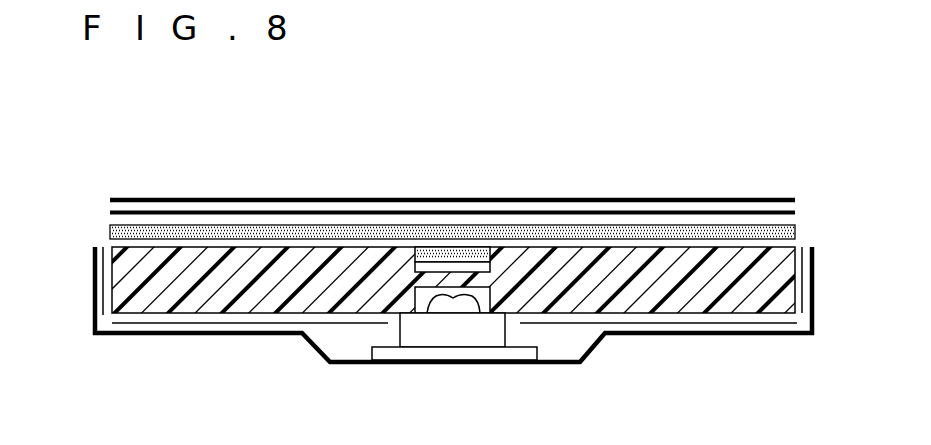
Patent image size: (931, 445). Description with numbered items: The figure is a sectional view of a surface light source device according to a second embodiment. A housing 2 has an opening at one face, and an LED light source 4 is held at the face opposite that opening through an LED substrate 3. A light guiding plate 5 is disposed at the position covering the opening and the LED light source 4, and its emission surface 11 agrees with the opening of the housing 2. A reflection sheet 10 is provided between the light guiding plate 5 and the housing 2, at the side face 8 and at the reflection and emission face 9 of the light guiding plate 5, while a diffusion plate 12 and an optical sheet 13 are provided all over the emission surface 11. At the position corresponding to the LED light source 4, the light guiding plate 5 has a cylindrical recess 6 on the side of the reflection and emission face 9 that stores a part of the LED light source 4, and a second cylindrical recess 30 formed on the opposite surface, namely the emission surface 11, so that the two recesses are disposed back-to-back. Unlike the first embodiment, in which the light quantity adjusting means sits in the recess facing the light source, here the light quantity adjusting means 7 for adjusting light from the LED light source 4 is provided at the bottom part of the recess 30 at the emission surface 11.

The housing 2 is at (772, 333).
The LED substrate 3 is at (385, 356).
The LED light source 4 is at (487, 333).
The light guiding plate 5 is at (733, 262).
The cylindrical recess 6 is at (431, 300).
The light quantity adjusting means 7 is at (430, 258).
The side face 8 is at (797, 285).
The reflection and emission face 9 is at (677, 313).
The reflection sheet 10 is at (217, 322).
The emission surface 11 is at (645, 247).
The diffusion plate 12 is at (265, 232).
The optical sheet 13 is at (532, 207).
The cylindrical recess 30 is at (468, 270).